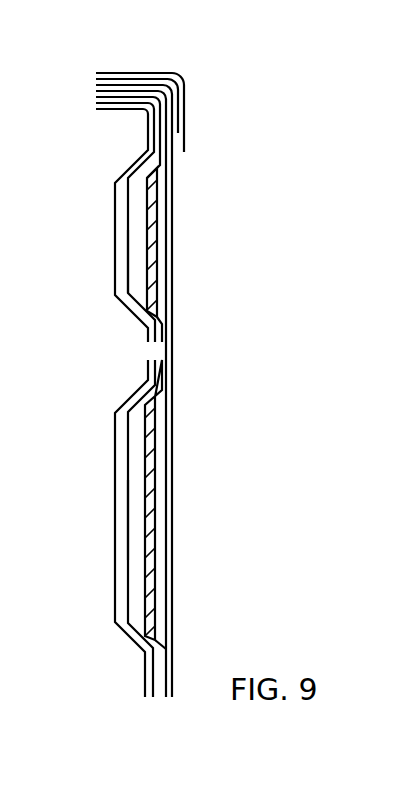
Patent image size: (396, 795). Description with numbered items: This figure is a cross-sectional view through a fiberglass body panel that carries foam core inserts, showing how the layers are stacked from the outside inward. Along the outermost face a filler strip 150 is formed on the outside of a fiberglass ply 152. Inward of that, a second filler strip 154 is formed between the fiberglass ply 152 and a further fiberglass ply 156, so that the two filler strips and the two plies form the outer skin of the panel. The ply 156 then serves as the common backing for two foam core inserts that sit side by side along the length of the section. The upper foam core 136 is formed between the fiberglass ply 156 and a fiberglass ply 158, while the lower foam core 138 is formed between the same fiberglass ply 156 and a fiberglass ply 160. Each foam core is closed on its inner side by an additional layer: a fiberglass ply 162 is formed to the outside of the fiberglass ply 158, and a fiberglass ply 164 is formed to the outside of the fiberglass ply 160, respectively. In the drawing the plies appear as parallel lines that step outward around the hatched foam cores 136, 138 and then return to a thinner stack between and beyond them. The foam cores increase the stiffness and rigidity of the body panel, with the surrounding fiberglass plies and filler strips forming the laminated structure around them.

The filler strip 150 is at (133, 71).
The fiberglass ply 152 is at (173, 237).
The filler strip 154 is at (116, 92).
The fiberglass ply 156 is at (173, 183).
The fiberglass ply 158 is at (124, 272).
The fiberglass ply 160 is at (125, 520).
The fiberglass ply 162 is at (116, 218).
The fiberglass ply 164 is at (116, 472).
The foam core 136 is at (153, 272).
The foam core 138 is at (152, 545).